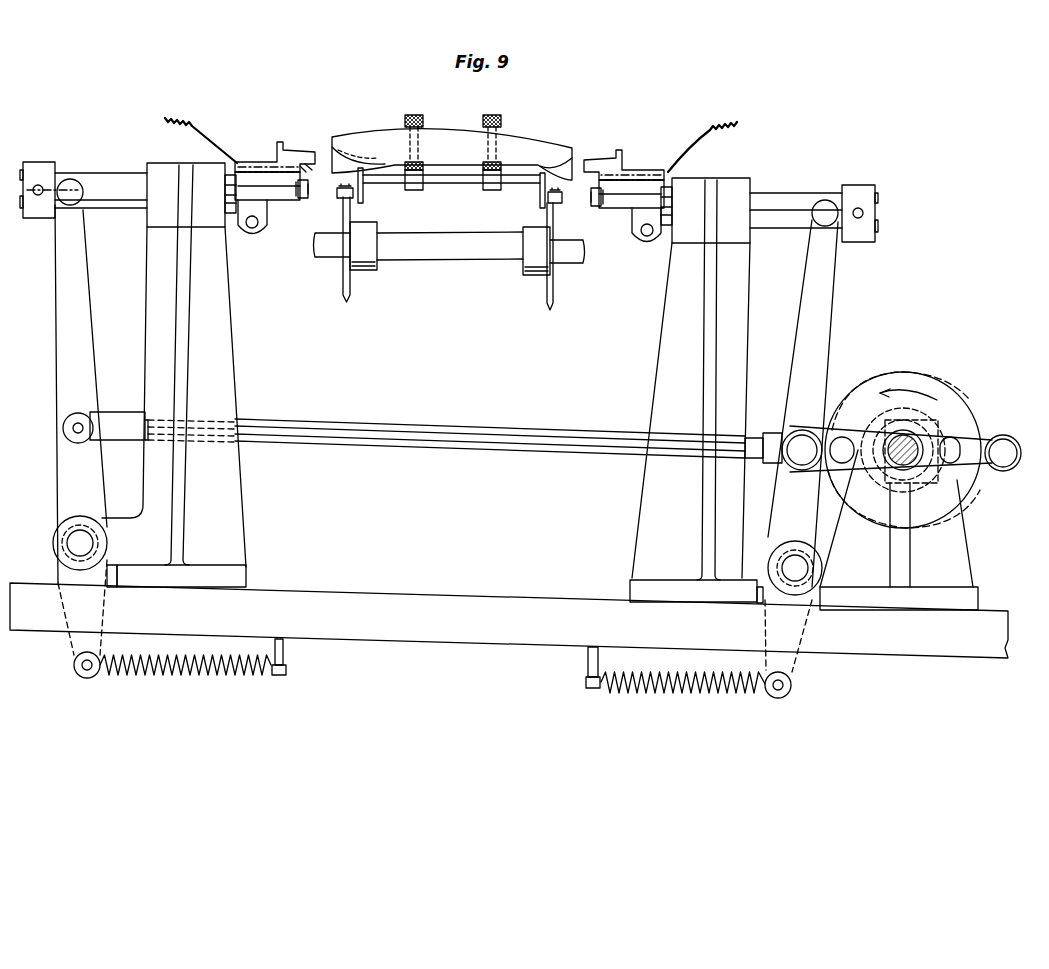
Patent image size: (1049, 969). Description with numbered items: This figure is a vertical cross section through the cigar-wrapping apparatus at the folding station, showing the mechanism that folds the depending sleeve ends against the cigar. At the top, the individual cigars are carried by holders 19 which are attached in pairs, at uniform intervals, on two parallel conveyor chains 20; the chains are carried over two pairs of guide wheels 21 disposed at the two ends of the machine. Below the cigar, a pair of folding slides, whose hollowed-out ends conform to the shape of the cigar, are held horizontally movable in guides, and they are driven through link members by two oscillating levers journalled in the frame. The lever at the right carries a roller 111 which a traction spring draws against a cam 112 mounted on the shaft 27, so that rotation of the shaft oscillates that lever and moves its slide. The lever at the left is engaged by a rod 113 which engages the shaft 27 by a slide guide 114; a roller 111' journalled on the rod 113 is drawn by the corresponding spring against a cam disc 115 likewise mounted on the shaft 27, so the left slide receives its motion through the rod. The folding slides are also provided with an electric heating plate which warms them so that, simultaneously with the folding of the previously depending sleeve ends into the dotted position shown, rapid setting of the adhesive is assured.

The holders 19 is at (423, 128).
The conveyor chains 20 is at (356, 192).
The guide wheels 21 is at (351, 296).
The shaft 27 is at (908, 455).
The roller 111 is at (782, 459).
The roller 111' is at (919, 436).
The cam 112 is at (985, 470).
The rod 113 is at (488, 448).
The slide guide 114 is at (940, 432).
The cam disc 115 is at (965, 520).